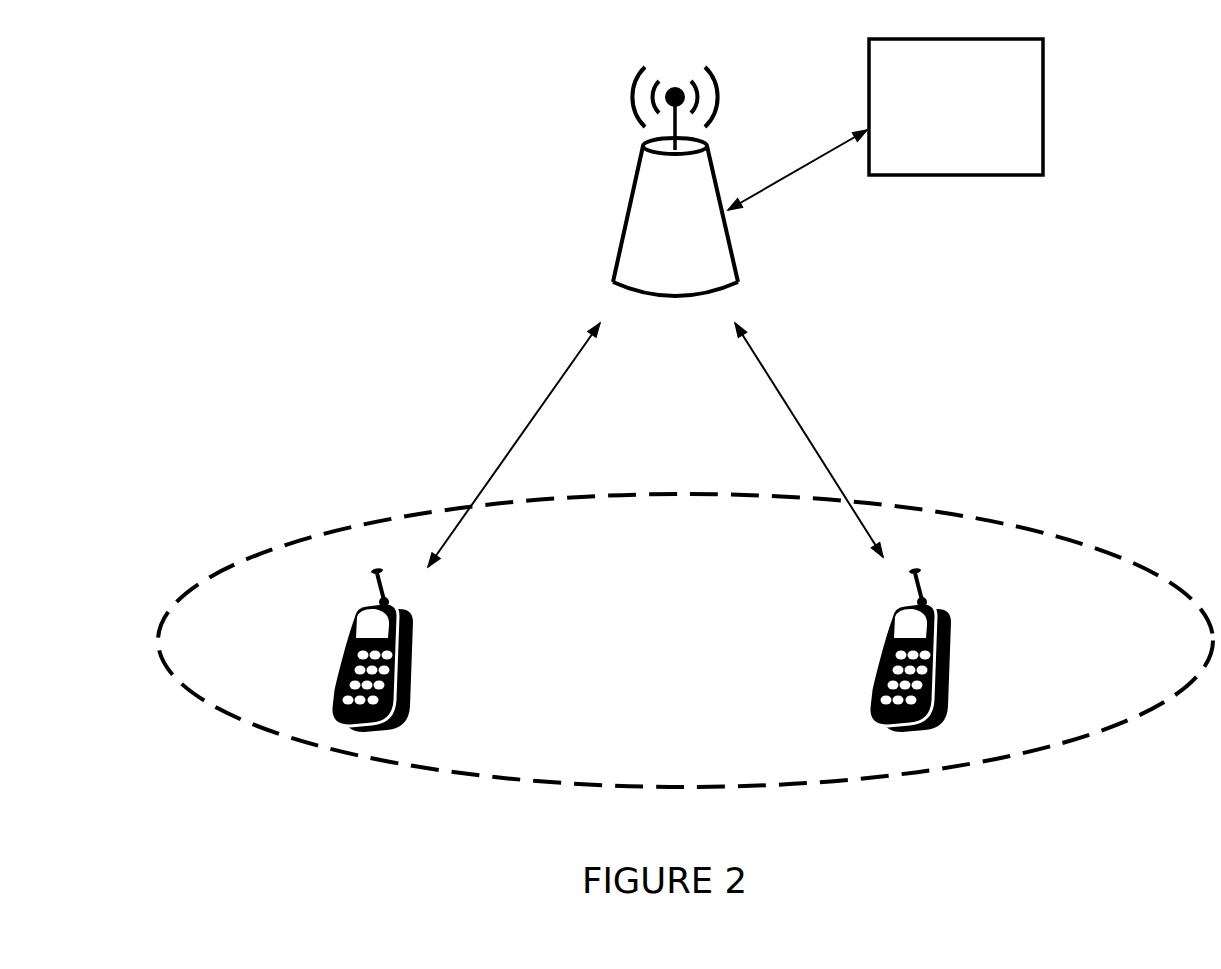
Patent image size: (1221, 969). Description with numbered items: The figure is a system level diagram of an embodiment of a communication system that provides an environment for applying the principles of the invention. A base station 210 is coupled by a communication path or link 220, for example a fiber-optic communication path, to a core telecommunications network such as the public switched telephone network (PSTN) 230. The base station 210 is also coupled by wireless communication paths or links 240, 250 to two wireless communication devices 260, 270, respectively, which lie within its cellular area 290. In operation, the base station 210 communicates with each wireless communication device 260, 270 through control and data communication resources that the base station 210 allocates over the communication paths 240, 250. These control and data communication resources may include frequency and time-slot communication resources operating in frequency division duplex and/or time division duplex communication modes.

The base station 210 is at (654, 272).
The communication path or link 220 is at (797, 173).
The public switched telephone network (PSTN) 230 is at (972, 159).
The wireless communication path or link 240 is at (514, 445).
The wireless communication path or link 250 is at (809, 440).
The wireless communication device 260 is at (332, 628).
The wireless communication device 270 is at (980, 654).
The cellular area 290 is at (640, 664).